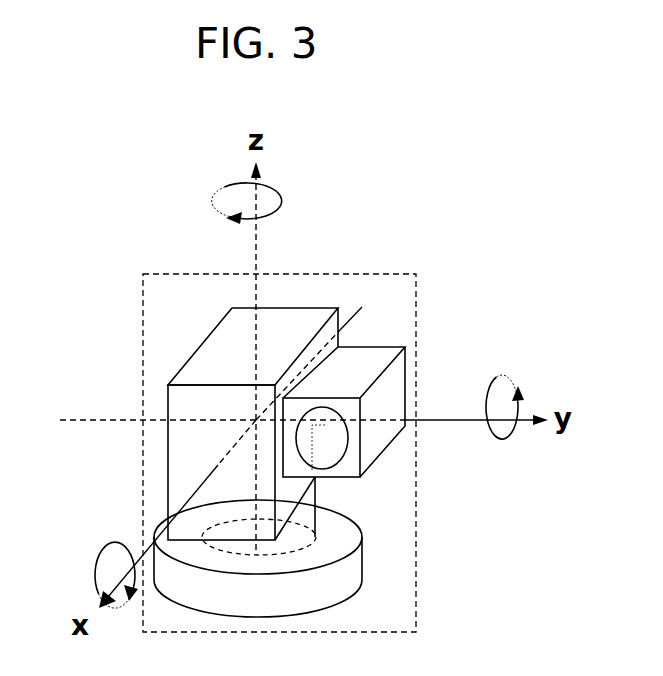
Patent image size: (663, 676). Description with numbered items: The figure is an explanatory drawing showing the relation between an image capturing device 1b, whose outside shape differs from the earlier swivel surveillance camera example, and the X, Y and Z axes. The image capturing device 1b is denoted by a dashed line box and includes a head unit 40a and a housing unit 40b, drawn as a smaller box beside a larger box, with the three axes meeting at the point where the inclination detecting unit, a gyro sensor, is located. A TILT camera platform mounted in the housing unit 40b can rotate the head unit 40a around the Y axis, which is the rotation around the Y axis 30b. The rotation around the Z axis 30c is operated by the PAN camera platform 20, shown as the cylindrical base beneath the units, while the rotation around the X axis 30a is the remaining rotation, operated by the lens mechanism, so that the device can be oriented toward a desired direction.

The image capturing device 1b is at (360, 274).
The PAN camera platform 20 is at (335, 602).
The rotation around the X axis 30a is at (100, 548).
The rotation around the Y axis 30b is at (497, 440).
The rotation around the Z axis 30c is at (282, 190).
The head unit 40a is at (407, 378).
The housing unit 40b is at (298, 307).